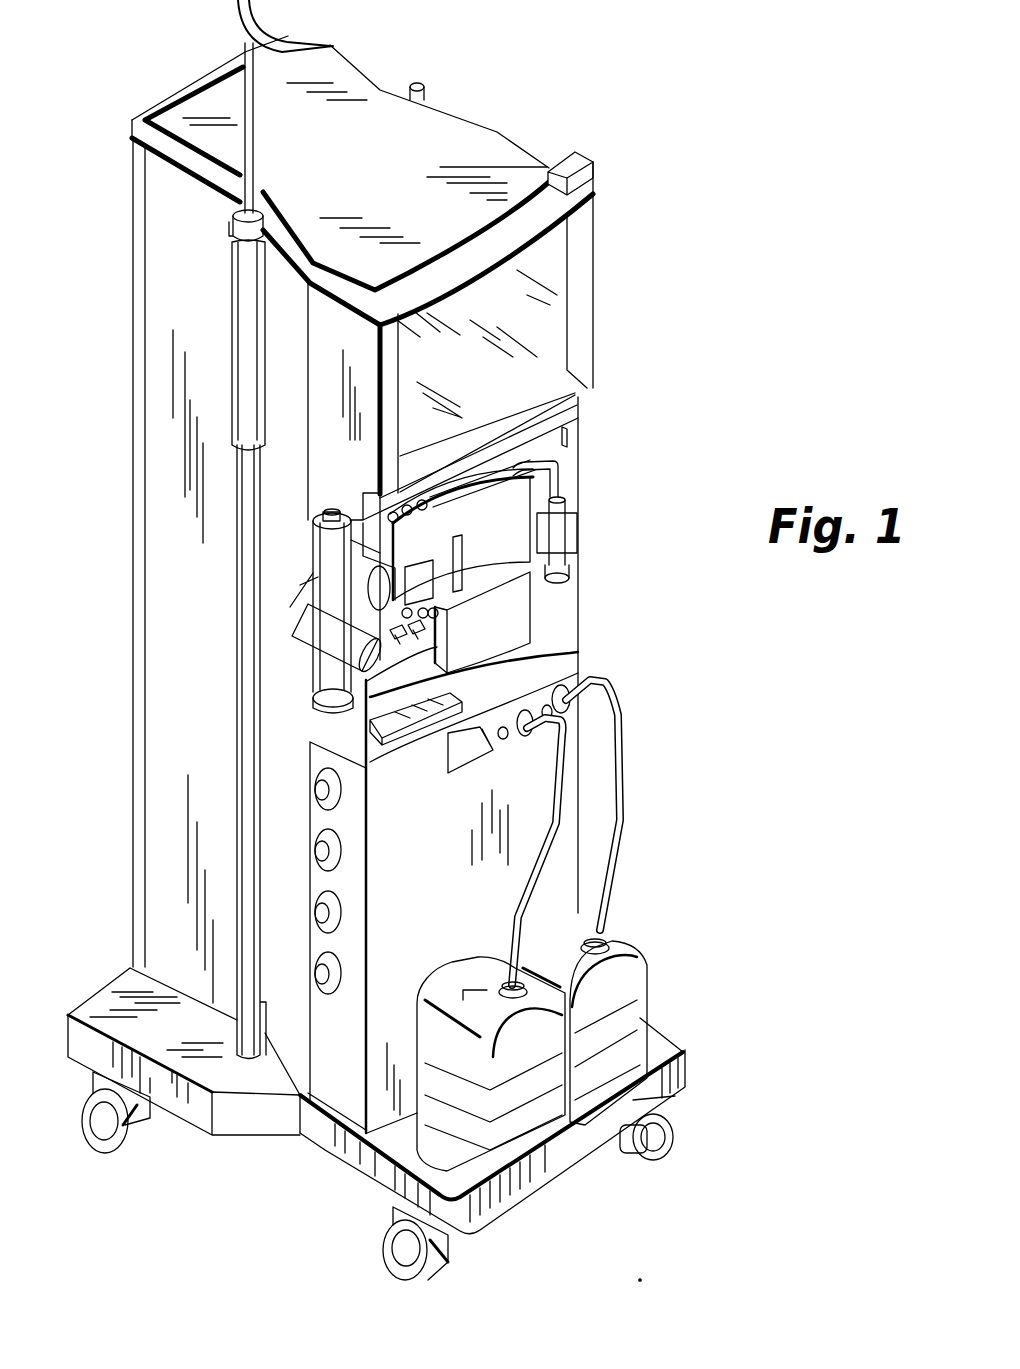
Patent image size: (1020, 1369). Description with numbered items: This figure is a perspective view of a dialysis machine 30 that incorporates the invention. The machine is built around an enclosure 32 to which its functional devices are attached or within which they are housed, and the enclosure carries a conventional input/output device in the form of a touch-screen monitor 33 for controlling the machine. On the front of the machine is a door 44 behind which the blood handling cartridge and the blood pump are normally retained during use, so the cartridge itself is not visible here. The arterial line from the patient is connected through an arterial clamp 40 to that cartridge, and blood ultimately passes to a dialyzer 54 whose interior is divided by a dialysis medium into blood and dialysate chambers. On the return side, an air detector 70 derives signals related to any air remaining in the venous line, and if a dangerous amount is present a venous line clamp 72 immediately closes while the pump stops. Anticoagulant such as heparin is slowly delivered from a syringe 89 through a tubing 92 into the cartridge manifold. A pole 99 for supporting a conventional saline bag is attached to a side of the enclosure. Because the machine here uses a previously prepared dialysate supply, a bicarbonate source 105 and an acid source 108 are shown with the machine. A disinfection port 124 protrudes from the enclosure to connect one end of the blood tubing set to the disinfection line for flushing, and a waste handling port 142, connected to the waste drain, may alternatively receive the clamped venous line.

The dialysis machine 30 is at (702, 261).
The enclosure 32 is at (500, 131).
The touch-screen monitor 33 is at (548, 332).
The arterial clamp 40 is at (578, 652).
The door 44 is at (525, 515).
The dialyzer 54 is at (322, 588).
The air detector 70 is at (367, 681).
The venous line clamp 72 is at (400, 732).
The syringe 89 is at (560, 513).
The tubing 92 is at (507, 490).
The pole 99 is at (257, 150).
The bicarbonate source 105 is at (378, 1167).
The acid source 108 is at (623, 995).
The disinfection port 124 is at (320, 913).
The waste handling port 142 is at (320, 972).